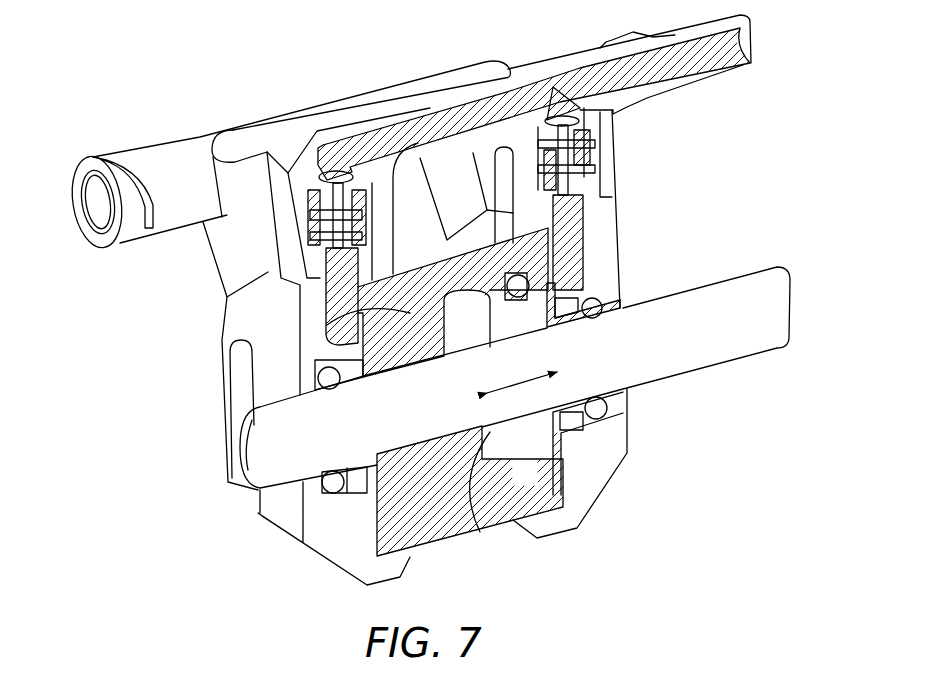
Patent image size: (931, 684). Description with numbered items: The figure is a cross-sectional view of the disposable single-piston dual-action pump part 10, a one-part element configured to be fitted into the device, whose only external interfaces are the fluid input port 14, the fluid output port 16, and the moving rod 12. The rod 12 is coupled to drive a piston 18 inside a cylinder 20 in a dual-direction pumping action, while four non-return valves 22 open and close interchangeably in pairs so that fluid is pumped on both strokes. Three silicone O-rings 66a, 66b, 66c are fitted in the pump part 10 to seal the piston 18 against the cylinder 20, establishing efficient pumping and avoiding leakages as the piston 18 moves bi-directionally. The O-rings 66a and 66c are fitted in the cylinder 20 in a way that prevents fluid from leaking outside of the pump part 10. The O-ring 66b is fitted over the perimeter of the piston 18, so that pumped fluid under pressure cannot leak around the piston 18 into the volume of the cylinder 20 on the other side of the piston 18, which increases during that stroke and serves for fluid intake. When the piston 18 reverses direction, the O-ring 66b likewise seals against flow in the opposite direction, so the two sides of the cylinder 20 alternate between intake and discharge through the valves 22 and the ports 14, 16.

The disposable single-piston dual-action pump part 10 is at (132, 100).
The moving rod 12 is at (772, 351).
The fluid input port 14 is at (126, 153).
The fluid output port 16 is at (738, 66).
The piston 18 is at (483, 441).
The cylinder 20 is at (400, 485).
The non-return valves 22 is at (588, 150).
The silicone O-ring 66a is at (315, 386).
The silicone O-ring 66b is at (590, 268).
The silicone O-ring 66c is at (595, 306).